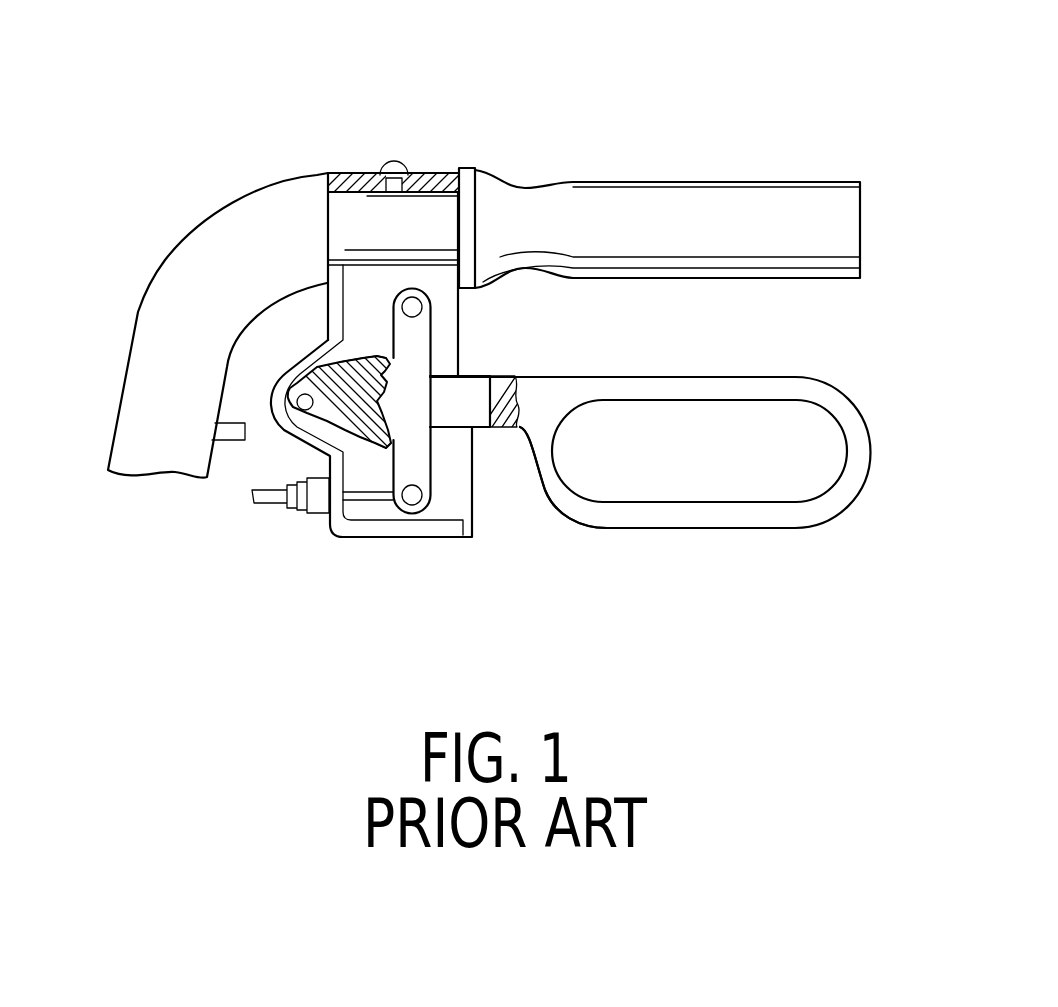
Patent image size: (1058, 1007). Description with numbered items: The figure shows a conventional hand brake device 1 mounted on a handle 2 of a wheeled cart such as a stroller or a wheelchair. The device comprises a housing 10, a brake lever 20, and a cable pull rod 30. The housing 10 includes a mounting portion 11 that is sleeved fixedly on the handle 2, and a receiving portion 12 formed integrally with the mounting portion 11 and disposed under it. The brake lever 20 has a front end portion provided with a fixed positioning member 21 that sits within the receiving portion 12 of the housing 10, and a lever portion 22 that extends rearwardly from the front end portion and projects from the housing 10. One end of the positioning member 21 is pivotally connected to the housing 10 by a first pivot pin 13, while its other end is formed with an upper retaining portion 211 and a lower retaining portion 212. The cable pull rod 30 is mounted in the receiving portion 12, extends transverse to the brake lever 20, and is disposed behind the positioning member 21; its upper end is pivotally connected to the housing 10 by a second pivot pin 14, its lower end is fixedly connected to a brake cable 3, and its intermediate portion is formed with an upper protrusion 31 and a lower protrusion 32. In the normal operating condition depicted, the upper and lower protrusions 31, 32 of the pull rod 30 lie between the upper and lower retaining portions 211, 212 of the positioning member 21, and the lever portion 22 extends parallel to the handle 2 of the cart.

The hand brake device 1 is at (328, 526).
The handle 2 is at (721, 182).
The brake cable 3 is at (373, 500).
The housing 10 is at (327, 303).
The mounting portion 11 is at (430, 177).
The receiving portion 12 is at (455, 345).
The first pivot pin 13 is at (300, 397).
The second pivot pin 14 is at (410, 303).
The brake lever 20 is at (853, 400).
The positioning member 21 is at (353, 418).
The upper retaining portion 211 is at (380, 357).
The lower retaining portion 212 is at (364, 436).
The lever portion 22 is at (773, 529).
The cable pull rod 30 is at (434, 438).
The upper protrusion 31 is at (449, 178).
The lower protrusion 32 is at (402, 423).